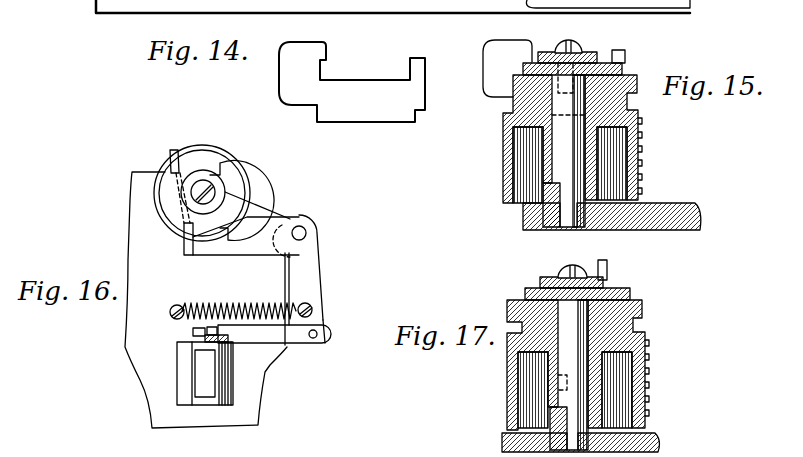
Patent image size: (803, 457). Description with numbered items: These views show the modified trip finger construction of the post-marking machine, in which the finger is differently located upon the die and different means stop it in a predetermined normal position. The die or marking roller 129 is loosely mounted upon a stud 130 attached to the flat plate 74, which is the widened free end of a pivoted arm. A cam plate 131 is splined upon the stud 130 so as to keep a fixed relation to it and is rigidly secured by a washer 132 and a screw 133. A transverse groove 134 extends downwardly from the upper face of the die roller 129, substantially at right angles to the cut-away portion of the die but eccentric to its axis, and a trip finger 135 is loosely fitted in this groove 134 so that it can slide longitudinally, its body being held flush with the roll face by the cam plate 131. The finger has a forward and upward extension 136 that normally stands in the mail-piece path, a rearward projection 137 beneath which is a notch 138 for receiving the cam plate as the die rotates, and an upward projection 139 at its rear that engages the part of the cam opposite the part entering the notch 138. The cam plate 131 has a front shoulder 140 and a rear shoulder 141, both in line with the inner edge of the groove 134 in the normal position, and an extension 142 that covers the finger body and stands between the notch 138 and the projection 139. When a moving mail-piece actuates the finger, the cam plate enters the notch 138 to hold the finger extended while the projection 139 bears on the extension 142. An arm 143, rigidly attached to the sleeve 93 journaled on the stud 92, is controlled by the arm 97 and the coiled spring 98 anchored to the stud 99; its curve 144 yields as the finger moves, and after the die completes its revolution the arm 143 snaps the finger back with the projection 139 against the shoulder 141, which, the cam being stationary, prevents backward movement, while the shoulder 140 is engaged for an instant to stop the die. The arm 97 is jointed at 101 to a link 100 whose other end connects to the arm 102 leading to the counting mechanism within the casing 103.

In FIG. 15, the flat horizontal plate 74 is at (630, 216).
In FIG. 17, the flat horizontal plate 74 is at (660, 434).
In FIG. 16, the flat horizontal plate 74 is at (153, 385).
In FIG. 16, the stud 92 is at (307, 232).
In FIG. 16, the sleeve 93 is at (318, 237).
In FIG. 16, the arm 97 is at (323, 289).
In FIG. 16, the coiled spring 98 is at (239, 301).
In FIG. 16, the stud 99 is at (177, 306).
In FIG. 16, the link 100 is at (275, 337).
In FIG. 16, the joint 101 is at (323, 343).
In FIG. 16, the arm 102 is at (195, 340).
In FIG. 16, the casing 103 is at (184, 400).
In FIG. 15, the die roller 129 is at (503, 140).
In FIG. 17, the die roller 129 is at (512, 380).
In FIG. 16, the die roller 129 is at (213, 165).
In FIG. 15, the stud 130 is at (580, 163).
In FIG. 17, the stud 130 is at (580, 388).
In FIG. 15, the cam plate 131 is at (603, 53).
In FIG. 17, the cam plate 131 is at (530, 291).
In FIG. 16, the cam plate 131 is at (198, 168).
In FIG. 15, the washer 132 is at (548, 52).
In FIG. 17, the washer 132 is at (547, 277).
In FIG. 16, the washer 132 is at (206, 178).
In FIG. 15, the screw 133 is at (575, 43).
In FIG. 17, the screw 133 is at (583, 270).
In FIG. 16, the screw 133 is at (215, 190).
In FIG. 17, the transverse groove 134 is at (620, 323).
In FIG. 16, the transverse groove 134 is at (167, 170).
In FIG. 14, the trip finger 135 is at (403, 87).
In FIG. 15, the trip finger 135 is at (506, 40).
In FIG. 17, the trip finger 135 is at (608, 273).
In FIG. 16, the trip finger 135 is at (173, 152).
In FIG. 14, the forward and upward extension 136 is at (294, 55).
In FIG. 15, the forward and upward extension 136 is at (483, 46).
In FIG. 17, the forward and upward extension 136 is at (606, 262).
In FIG. 16, the forward and upward extension 136 is at (183, 255).
In FIG. 14, the rearward projection 137 is at (330, 55).
In FIG. 15, the rearward projection 137 is at (530, 62).
In FIG. 14, the notch 138 is at (325, 73).
In FIG. 15, the notch 138 is at (512, 62).
In FIG. 17, the notch 138 is at (605, 288).
In FIG. 14, the upward projection 139 is at (420, 57).
In FIG. 15, the upward projection 139 is at (618, 47).
In FIG. 16, the upward projection 139 is at (165, 158).
In FIG. 16, the front shoulder 140 is at (221, 165).
In FIG. 16, the rear shoulder 141 is at (222, 258).
In FIG. 15, the extension 142 is at (628, 66).
In FIG. 17, the extension 142 is at (630, 290).
In FIG. 16, the extension 142 is at (232, 202).
In FIG. 16, the arm 143 is at (246, 223).
In FIG. 16, the curve 144 is at (278, 221).